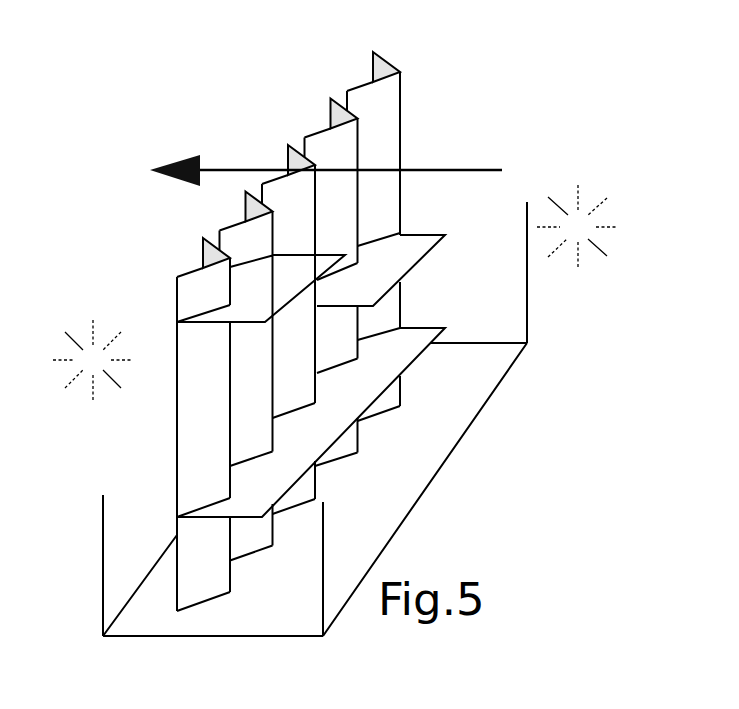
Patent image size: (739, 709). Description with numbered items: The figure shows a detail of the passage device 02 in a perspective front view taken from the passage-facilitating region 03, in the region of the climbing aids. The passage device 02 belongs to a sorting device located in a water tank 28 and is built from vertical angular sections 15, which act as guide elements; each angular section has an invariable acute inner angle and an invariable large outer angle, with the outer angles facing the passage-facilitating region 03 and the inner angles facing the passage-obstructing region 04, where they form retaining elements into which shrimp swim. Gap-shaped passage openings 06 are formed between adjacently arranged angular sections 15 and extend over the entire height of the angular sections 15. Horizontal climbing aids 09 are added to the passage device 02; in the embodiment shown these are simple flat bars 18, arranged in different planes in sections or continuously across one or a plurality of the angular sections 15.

The passage device 02 is at (287, 344).
The passage-facilitating region 03 is at (577, 226).
The passage-obstructing region 04 is at (93, 360).
The passage openings 06 is at (204, 229).
The climbing aids 09 is at (347, 376).
The flat bars 18 is at (410, 340).
The angular sections 15 is at (297, 153).
The water tank 28 is at (104, 550).